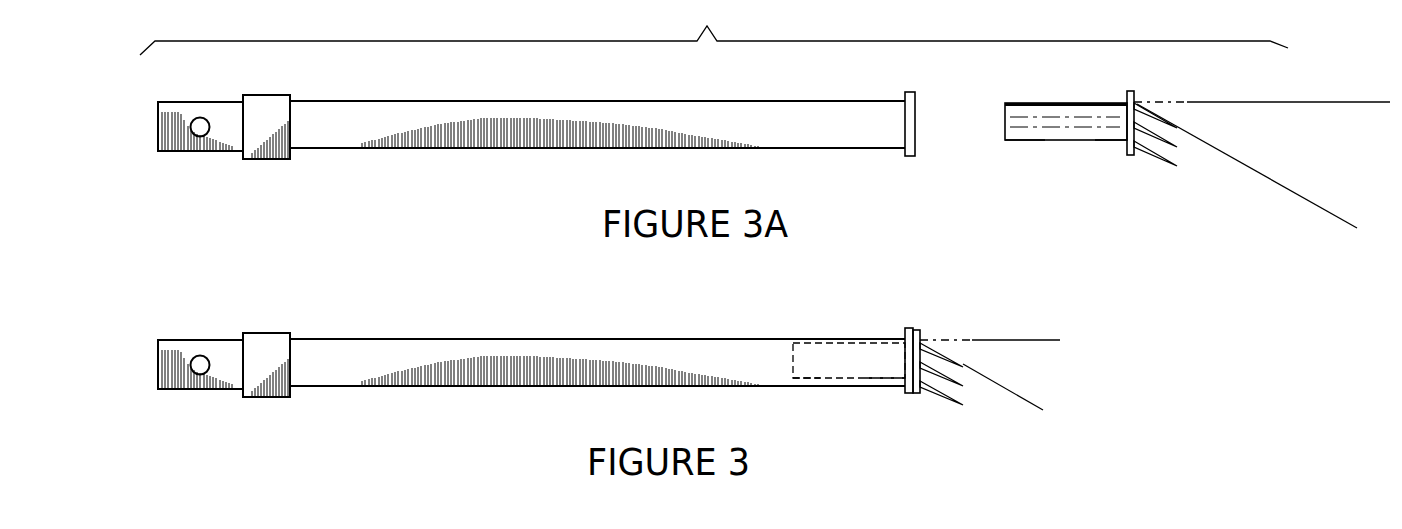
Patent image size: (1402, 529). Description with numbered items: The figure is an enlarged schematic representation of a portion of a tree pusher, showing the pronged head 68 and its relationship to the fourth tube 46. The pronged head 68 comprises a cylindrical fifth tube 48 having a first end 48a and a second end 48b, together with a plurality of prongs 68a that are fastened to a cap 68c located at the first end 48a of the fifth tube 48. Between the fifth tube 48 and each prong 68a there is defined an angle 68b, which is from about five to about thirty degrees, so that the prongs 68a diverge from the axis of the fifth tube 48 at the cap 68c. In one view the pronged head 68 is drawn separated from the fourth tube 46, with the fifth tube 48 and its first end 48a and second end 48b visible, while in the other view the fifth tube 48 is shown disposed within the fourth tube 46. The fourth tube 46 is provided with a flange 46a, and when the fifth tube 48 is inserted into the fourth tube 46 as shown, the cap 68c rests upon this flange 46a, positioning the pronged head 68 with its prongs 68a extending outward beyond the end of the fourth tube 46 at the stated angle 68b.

In FIG. 3A, the fourth tube 46 is at (752, 98).
In FIG. 3, the fourth tube 46 is at (752, 337).
In FIG. 3A, the flange 46a is at (917, 90).
In FIG. 3, the flange 46a is at (903, 338).
In FIG. 3A, the fifth tube 48 is at (1060, 152).
In FIG. 3, the fifth tube 48 is at (853, 380).
In FIG. 3A, the first end 48a is at (1112, 140).
In FIG. 3, the first end 48a is at (870, 380).
In FIG. 3A, the second end 48b is at (1035, 142).
In FIG. 3, the second end 48b is at (797, 390).
In FIG. 3A, the pronged head 68 is at (1176, 171).
In FIG. 3, the pronged head 68 is at (985, 375).
In FIG. 3A, the prongs 68a is at (1163, 152).
In FIG. 3, the prongs 68a is at (937, 395).
In FIG. 3A, the angle 68b is at (1342, 212).
In FIG. 3, the angle 68b is at (1037, 342).
In FIG. 3A, the cap 68c is at (1127, 92).
In FIG. 3, the cap 68c is at (917, 328).